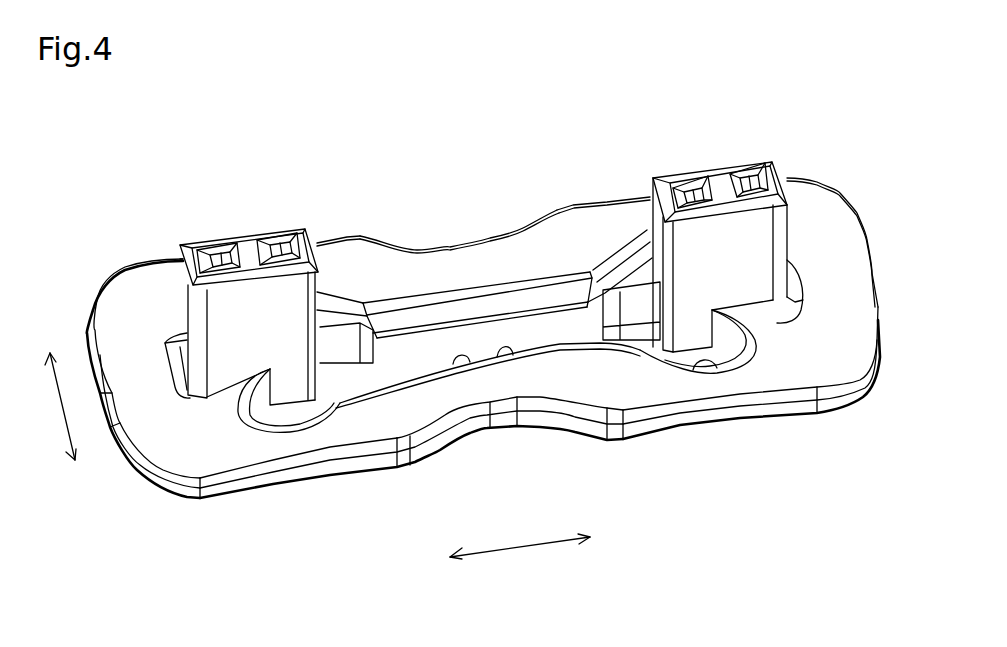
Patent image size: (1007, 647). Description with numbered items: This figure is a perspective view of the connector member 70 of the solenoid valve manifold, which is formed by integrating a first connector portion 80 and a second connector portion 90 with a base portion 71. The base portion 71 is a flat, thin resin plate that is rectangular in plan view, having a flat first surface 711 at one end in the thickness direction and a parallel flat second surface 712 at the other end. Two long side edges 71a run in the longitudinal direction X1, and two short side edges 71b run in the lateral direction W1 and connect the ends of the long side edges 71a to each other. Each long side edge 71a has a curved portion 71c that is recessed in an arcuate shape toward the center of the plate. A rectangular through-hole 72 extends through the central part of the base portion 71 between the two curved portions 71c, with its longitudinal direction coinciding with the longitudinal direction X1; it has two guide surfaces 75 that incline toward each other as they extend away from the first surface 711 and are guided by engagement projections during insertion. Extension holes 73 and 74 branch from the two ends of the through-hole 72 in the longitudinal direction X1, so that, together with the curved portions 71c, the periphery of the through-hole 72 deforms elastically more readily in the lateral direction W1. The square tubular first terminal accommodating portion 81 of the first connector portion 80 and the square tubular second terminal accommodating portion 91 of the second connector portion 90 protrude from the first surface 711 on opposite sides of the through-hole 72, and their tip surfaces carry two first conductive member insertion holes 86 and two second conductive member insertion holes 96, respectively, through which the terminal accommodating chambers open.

The connector member 70 is at (116, 185).
The base portion 71 is at (157, 485).
The long side edges 71a is at (603, 203).
The short side edges 71b is at (93, 383).
The curved portion 71c is at (405, 245).
The first surface 711 is at (140, 310).
The second surface 712 is at (800, 413).
The through-hole 72 is at (457, 363).
The extension hole 73 is at (297, 408).
The extension hole 74 is at (713, 357).
The guide surfaces 75 is at (487, 310).
The first connector portion 80 is at (184, 236).
The first terminal accommodating portion 81 is at (300, 226).
The first conductive member insertion holes 86 is at (273, 233).
The second connector portion 90 is at (771, 157).
The second terminal accommodating portion 91 is at (657, 175).
The second conductive member insertion holes 96 is at (740, 160).
The lateral direction W1 is at (62, 408).
The longitudinal direction X1 is at (517, 552).